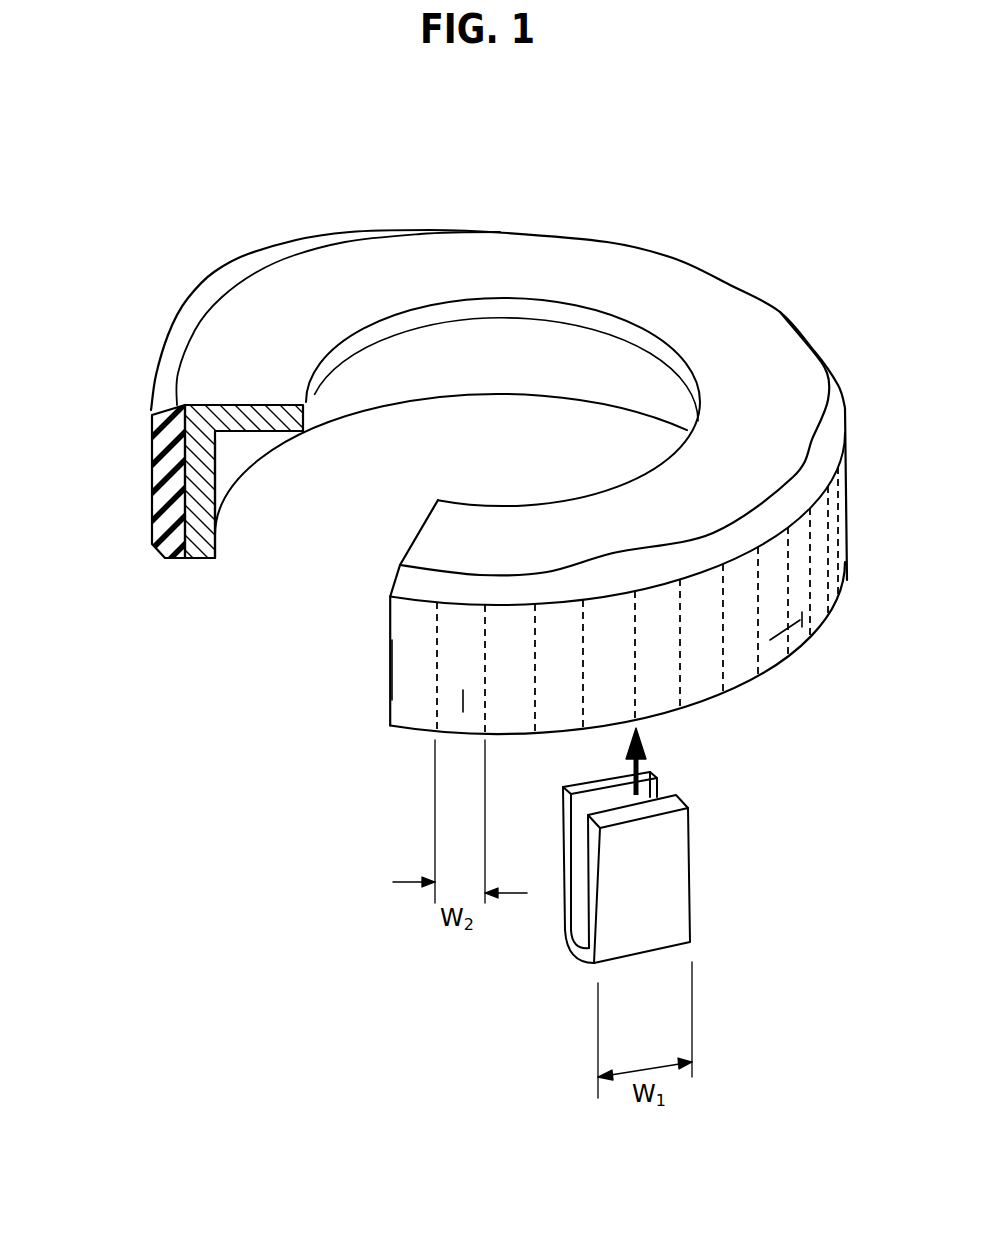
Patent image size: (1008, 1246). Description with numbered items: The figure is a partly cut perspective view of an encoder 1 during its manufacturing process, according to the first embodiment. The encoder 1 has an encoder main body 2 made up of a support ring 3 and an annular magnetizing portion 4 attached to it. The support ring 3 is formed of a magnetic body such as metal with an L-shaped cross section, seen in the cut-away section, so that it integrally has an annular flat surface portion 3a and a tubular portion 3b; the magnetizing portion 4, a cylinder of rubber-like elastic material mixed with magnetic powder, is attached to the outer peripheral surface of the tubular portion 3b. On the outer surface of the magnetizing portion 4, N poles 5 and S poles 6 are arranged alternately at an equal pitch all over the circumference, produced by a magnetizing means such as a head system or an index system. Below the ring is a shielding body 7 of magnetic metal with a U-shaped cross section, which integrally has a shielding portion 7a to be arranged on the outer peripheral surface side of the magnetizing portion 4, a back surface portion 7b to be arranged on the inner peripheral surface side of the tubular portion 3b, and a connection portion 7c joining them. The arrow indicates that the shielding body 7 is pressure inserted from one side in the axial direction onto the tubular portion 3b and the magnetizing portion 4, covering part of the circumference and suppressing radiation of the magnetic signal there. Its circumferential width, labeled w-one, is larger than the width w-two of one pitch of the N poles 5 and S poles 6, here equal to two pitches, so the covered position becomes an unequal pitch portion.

The encoder 1 is at (738, 238).
The encoder main body 2 is at (502, 256).
The support ring 3 is at (218, 407).
The annular flat surface portion 3a is at (253, 431).
The tubular portion 3b is at (200, 546).
The magnetizing portion 4 is at (163, 500).
The N poles 5 is at (405, 706).
The S poles 6 is at (463, 713).
The shielding body 7 is at (647, 870).
The shielding portion 7a is at (678, 850).
The back surface portion 7b is at (570, 858).
The connection portion 7c is at (577, 944).